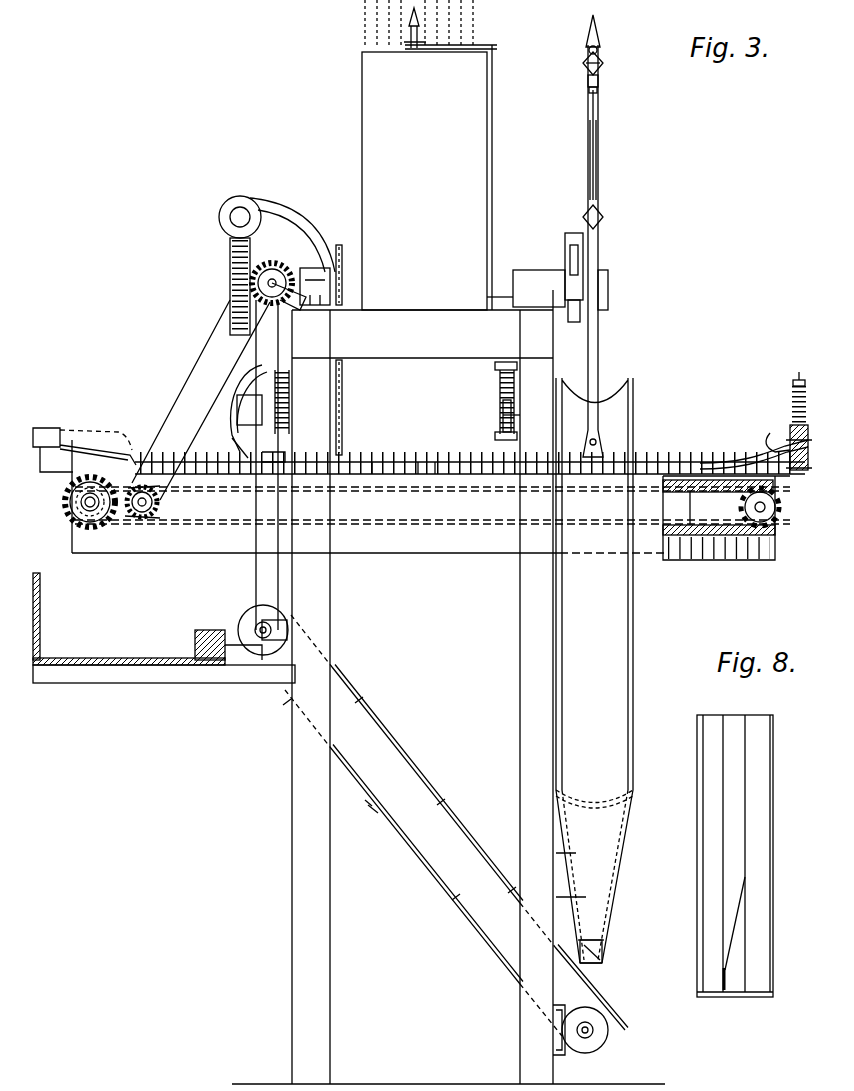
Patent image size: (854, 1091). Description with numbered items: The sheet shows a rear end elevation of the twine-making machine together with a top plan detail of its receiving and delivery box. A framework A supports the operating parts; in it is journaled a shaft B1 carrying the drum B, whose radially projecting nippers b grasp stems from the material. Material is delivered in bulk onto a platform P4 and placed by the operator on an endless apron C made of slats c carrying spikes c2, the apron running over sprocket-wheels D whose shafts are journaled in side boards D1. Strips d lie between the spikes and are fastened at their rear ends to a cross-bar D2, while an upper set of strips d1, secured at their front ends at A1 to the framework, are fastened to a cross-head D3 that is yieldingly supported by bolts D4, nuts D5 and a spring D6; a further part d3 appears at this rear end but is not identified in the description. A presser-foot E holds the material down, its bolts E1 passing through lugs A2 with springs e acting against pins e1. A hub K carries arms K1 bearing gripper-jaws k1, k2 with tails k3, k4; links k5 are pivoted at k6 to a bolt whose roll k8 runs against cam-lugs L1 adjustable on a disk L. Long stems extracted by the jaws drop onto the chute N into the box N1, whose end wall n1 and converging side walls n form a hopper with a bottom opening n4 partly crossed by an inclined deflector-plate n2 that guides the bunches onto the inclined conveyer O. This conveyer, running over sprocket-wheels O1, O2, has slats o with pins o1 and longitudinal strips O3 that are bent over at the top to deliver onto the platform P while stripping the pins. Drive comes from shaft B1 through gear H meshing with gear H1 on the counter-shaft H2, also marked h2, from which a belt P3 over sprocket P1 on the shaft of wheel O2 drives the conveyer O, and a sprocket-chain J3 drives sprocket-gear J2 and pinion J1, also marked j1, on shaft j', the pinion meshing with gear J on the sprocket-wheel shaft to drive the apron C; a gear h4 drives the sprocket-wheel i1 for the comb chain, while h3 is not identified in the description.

In FIG. 3, the framework A is at (330, 648).
In FIG. 3, the securing point on framework A1 is at (237, 410).
In FIG. 3, the lugs A2 is at (495, 366).
In FIG. 3, the drum B is at (462, 104).
In FIG. 3, the nippers b is at (420, 34).
In FIG. 3, the shaft B1 is at (500, 280).
In FIG. 3, the endless apron C is at (744, 507).
In FIG. 3, the slats c is at (695, 488).
In FIG. 3, the spikes c2 is at (420, 470).
In FIG. 3, the sprocket-wheels D is at (735, 556).
In FIG. 3, the side boards D1 is at (438, 496).
In FIG. 3, the cross-bar D2 is at (785, 500).
In FIG. 3, the cross-head D3 is at (782, 438).
In FIG. 3, the studs or bolts D4 is at (808, 430).
In FIG. 3, the nuts D5 is at (800, 380).
In FIG. 3, the spring D6 is at (795, 398).
In FIG. 3, the strips d is at (432, 462).
In FIG. 3, the upper strips d1 is at (378, 462).
In FIG. 3, the arm end d3 is at (768, 440).
In FIG. 3, the presser-foot E is at (236, 432).
In FIG. 3, the standards or bolts E1 is at (503, 418).
In FIG. 3, the springs e is at (289, 396).
In FIG. 3, the pins e1 is at (512, 418).
In FIG. 3, the gear H is at (230, 272).
In FIG. 3, the gear H1 is at (223, 205).
In FIG. 3, the counter-shaft H2 is at (240, 208).
In FIG. 3, the counter-shaft h2 is at (287, 262).
In FIG. 3, the inner arc lever h3 is at (292, 272).
In FIG. 3, the gear h4 is at (274, 275).
In FIG. 3, the sprocket-wheel i1 is at (345, 398).
In FIG. 3, the gear J is at (100, 528).
In FIG. 3, the pinion J1 is at (345, 258).
In FIG. 3, the pinion j1 is at (138, 512).
In FIG. 3, the shaft j' is at (156, 543).
In FIG. 3, the sprocket-gear J2 is at (157, 510).
In FIG. 3, the sprocket-chain J3 is at (205, 375).
In FIG. 3, the hub K is at (606, 272).
In FIG. 3, the arms K1 is at (603, 162).
In FIG. 3, the gripper-jaw k1 is at (584, 36).
In FIG. 3, the gripper-jaw k2 is at (600, 42).
In FIG. 3, the tail k3 is at (584, 58).
In FIG. 3, the tail k4 is at (602, 62).
In FIG. 3, the links k5 is at (585, 74).
In FIG. 3, the pivot k6 is at (591, 90).
In FIG. 3, the roll k8 is at (570, 262).
In FIG. 3, the disk L is at (570, 250).
In FIG. 3, the cam-lugs L1 is at (574, 324).
In FIG. 3, the chute N is at (628, 672).
In FIG. 3, the box or casing N1 is at (608, 868).
In FIG. 3, the side walls n is at (558, 903).
In FIG. 8, the side walls n is at (697, 910).
In FIG. 8, the end wall n1 is at (737, 997).
In FIG. 3, the deflector-plate n2 is at (598, 962).
In FIG. 8, the deflector-plate n2 is at (733, 960).
In FIG. 3, the opening n4 is at (590, 965).
In FIG. 8, the opening n4 is at (733, 846).
In FIG. 3, the conveyer O is at (422, 866).
In FIG. 3, the sprocket-wheel O1 is at (594, 1032).
In FIG. 3, the sprocket-wheel O2 is at (263, 640).
In FIG. 3, the strips O3 is at (468, 838).
In FIG. 3, the slats o is at (372, 815).
In FIG. 3, the pins o1 is at (366, 806).
In FIG. 3, the platform P is at (134, 666).
In FIG. 3, the sprocket-gear P1 is at (250, 630).
In FIG. 3, the belt P3 is at (256, 540).
In FIG. 3, the platform P4 is at (62, 460).